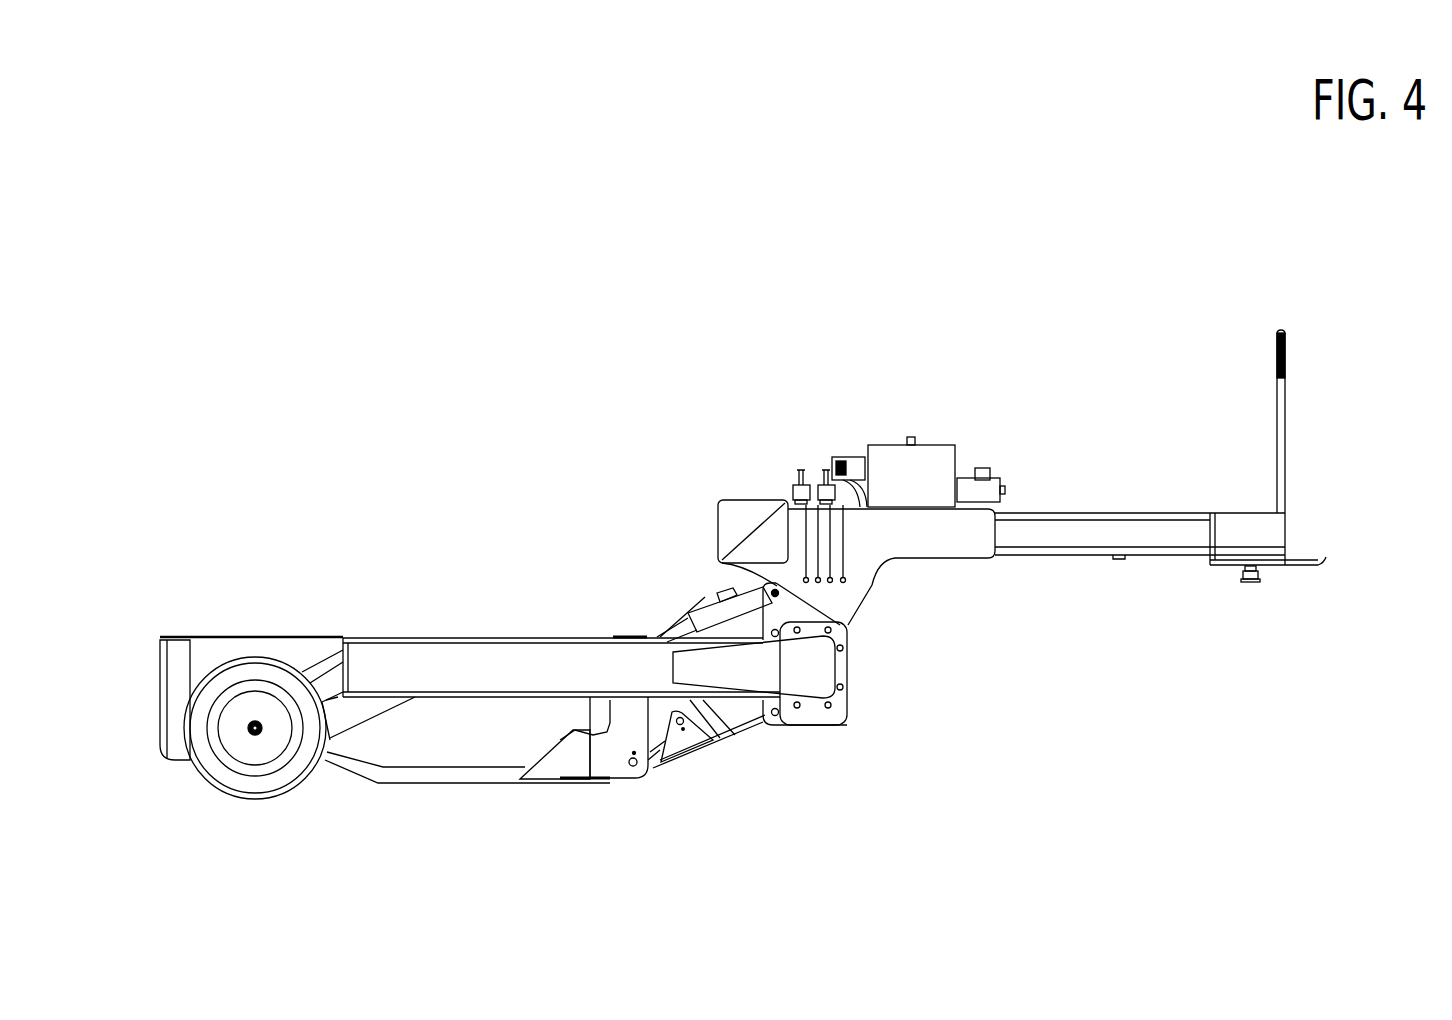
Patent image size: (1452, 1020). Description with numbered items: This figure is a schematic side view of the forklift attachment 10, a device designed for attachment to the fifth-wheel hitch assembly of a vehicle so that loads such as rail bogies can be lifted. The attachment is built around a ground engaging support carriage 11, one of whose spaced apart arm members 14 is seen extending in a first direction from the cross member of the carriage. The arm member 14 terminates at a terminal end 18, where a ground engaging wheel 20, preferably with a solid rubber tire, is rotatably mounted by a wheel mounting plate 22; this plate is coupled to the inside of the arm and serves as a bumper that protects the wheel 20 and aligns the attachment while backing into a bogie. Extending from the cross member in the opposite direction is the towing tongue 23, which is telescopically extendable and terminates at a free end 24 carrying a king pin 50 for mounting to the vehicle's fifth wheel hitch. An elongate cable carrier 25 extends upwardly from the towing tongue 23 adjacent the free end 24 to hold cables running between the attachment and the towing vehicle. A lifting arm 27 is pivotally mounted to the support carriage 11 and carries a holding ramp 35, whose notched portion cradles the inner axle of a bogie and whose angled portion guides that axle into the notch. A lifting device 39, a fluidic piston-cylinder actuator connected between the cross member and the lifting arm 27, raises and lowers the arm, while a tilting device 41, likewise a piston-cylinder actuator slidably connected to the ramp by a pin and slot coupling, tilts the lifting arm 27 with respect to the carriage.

The forklift attachment 10 is at (377, 447).
The support carriage 11 is at (535, 603).
The arm member 14 is at (573, 643).
The terminal end 18 is at (350, 647).
The ground engaging wheel 20 is at (292, 795).
The wheel mounting plate 22 is at (302, 643).
The towing tongue 23 is at (1117, 513).
The free end 24 is at (1288, 527).
The cable carrier 25 is at (1285, 403).
The lifting arm 27 is at (452, 775).
The holding ramp 35 is at (633, 778).
The lifting device 39 is at (708, 712).
The tilting device 41 is at (712, 607).
The king pin 50 is at (1260, 580).